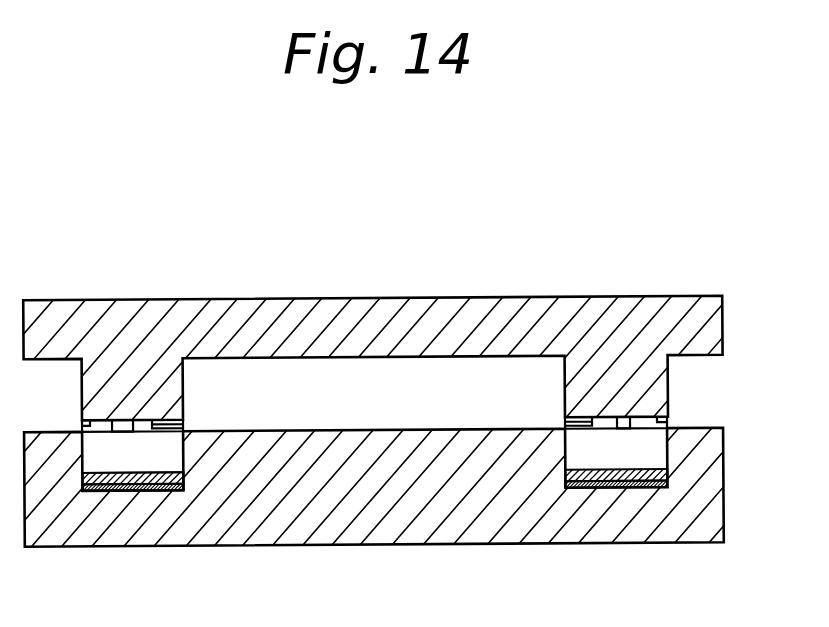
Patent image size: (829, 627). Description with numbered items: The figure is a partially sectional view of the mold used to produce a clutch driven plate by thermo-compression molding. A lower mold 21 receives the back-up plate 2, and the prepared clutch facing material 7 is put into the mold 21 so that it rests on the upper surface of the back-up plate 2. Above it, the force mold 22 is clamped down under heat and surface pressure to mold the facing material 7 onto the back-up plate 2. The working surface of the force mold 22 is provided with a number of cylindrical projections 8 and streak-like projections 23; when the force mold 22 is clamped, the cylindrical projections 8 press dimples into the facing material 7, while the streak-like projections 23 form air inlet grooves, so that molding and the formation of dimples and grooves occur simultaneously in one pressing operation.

The force mold 22 is at (715, 320).
The mold 21 is at (703, 530).
The streak-like projections 23 is at (183, 423).
The clutch facing material 7 is at (666, 476).
The back-up plate 2 is at (662, 487).
The cylindrical projections 8 is at (142, 431).